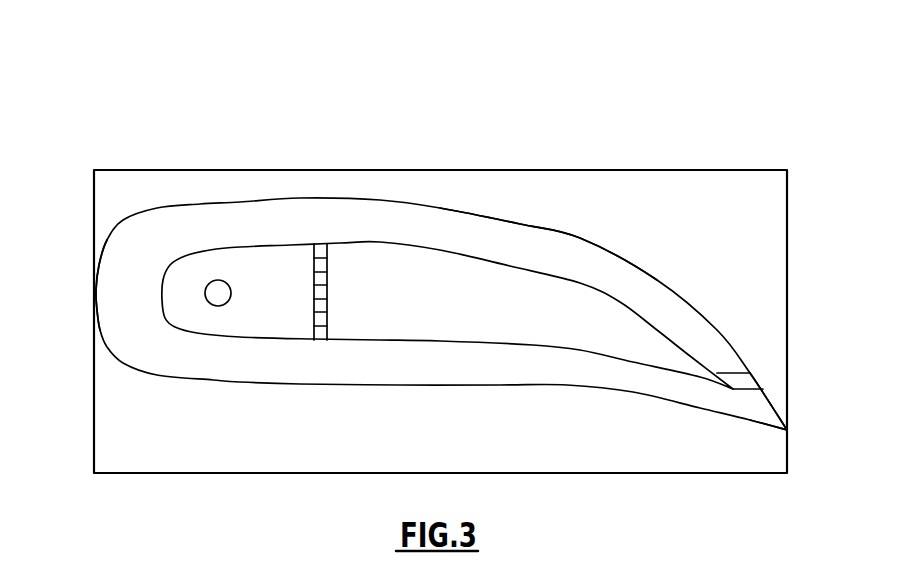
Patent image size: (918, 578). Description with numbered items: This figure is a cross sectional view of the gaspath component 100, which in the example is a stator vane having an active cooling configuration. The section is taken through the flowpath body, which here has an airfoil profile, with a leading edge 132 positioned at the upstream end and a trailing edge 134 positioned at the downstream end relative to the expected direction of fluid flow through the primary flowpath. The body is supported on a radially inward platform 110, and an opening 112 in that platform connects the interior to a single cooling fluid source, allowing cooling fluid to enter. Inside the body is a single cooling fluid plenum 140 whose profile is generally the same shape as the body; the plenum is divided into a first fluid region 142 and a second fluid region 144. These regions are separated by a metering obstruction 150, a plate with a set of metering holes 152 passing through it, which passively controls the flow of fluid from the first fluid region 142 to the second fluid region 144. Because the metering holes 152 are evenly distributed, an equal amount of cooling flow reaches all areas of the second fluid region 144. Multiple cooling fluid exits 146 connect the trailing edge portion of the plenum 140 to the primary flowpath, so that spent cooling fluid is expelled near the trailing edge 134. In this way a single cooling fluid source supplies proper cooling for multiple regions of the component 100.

The gaspath component 100 is at (112, 62).
The radially inward platform 110 is at (138, 462).
The opening 112 is at (213, 289).
The leading edge 132 is at (93, 289).
The trailing edge 134 is at (789, 432).
The cooling fluid plenum 140 is at (349, 242).
The first fluid region 142 is at (253, 315).
The second fluid region 144 is at (482, 275).
The cooling fluid exits 146 is at (735, 373).
The metering obstruction 150 is at (328, 305).
The metering holes 152 is at (322, 280).